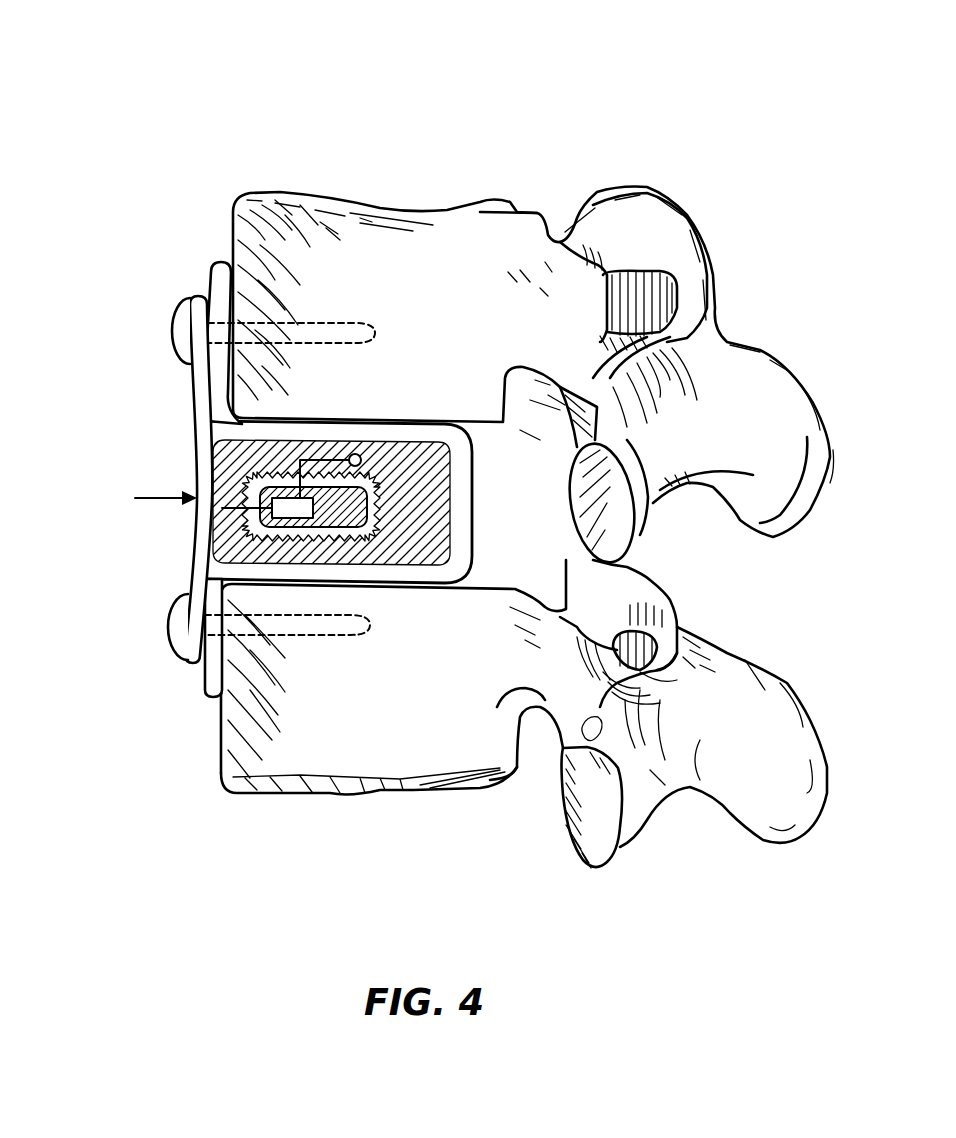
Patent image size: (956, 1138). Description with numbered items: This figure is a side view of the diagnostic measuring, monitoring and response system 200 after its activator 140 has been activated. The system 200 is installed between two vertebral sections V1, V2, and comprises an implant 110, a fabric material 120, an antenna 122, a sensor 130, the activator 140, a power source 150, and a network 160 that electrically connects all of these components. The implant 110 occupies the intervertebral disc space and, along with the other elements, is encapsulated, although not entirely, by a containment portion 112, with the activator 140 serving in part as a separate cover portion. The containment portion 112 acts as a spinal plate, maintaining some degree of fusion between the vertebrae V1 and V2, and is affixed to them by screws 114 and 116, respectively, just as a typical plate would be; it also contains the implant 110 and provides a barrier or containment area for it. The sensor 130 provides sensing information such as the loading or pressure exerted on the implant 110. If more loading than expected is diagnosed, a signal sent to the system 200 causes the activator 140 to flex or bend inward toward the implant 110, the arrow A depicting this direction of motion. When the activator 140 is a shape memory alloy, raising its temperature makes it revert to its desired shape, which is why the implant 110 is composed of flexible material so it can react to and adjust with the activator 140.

The diagnostic measuring, monitoring and response system 200 is at (254, 96).
The vertebral section V1 is at (463, 293).
The vertebral section V2 is at (390, 740).
The implant 110 is at (403, 488).
The containment portion 112 is at (210, 273).
The screw 114 is at (175, 333).
The screw 116 is at (167, 625).
The fabric material 120 is at (380, 498).
The antenna 122 is at (372, 517).
The sensor 130 is at (293, 511).
The activator 140 is at (193, 412).
The power source 150 is at (362, 459).
The network 160 is at (225, 505).
The arrow A is at (153, 496).